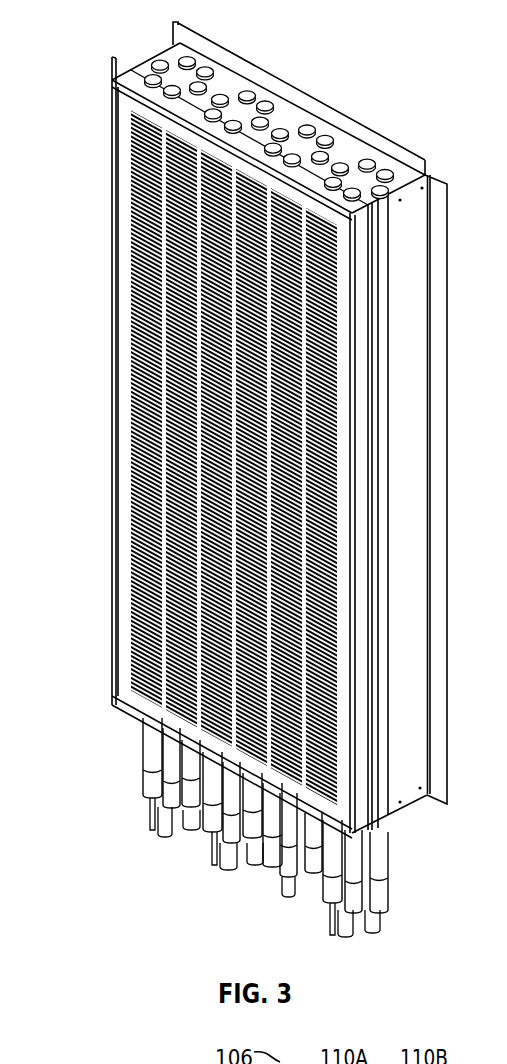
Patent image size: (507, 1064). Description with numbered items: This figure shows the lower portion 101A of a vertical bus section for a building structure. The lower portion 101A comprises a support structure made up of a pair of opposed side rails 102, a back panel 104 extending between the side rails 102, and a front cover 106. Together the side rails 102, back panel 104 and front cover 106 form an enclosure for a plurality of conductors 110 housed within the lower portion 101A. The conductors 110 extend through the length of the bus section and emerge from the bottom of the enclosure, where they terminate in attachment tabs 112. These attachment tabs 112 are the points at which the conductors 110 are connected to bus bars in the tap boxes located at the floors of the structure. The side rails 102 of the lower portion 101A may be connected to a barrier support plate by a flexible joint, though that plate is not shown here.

The lower portion 101A is at (378, 62).
The side rails 102 is at (148, 51).
The back panel 104 is at (357, 137).
The front cover 106 is at (133, 272).
The conductors 110 is at (128, 763).
The attachment tabs 112 is at (373, 920).